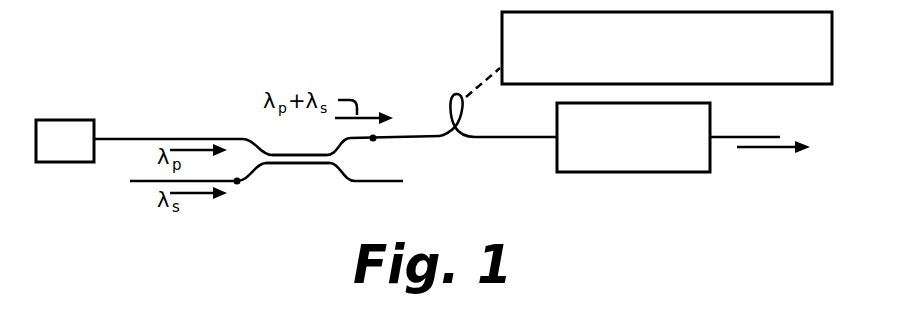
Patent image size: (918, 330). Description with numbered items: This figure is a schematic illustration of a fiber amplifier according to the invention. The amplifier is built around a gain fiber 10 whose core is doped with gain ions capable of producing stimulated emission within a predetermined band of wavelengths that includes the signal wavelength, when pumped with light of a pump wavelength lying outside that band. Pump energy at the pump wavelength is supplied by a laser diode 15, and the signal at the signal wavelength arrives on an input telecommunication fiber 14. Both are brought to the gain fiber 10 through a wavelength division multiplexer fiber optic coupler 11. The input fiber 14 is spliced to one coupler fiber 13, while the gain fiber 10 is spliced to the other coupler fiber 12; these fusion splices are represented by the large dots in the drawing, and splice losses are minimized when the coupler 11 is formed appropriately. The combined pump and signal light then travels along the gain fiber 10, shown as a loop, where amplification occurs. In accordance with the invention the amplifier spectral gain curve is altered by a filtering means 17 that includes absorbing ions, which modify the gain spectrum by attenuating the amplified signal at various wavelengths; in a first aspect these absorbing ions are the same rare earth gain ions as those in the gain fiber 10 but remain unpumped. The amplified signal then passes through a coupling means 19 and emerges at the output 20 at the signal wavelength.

The gain fiber 10 is at (453, 93).
The wavelength division multiplexer fiber optic coupler 11 is at (317, 164).
The coupler fiber 12 is at (181, 137).
The coupler fiber 13 is at (241, 183).
The input telecommunication fiber 14 is at (135, 181).
The laser diode 15 is at (72, 120).
The filtering means 17 is at (649, 54).
The coupling means 19 is at (633, 137).
The output 20 is at (735, 136).